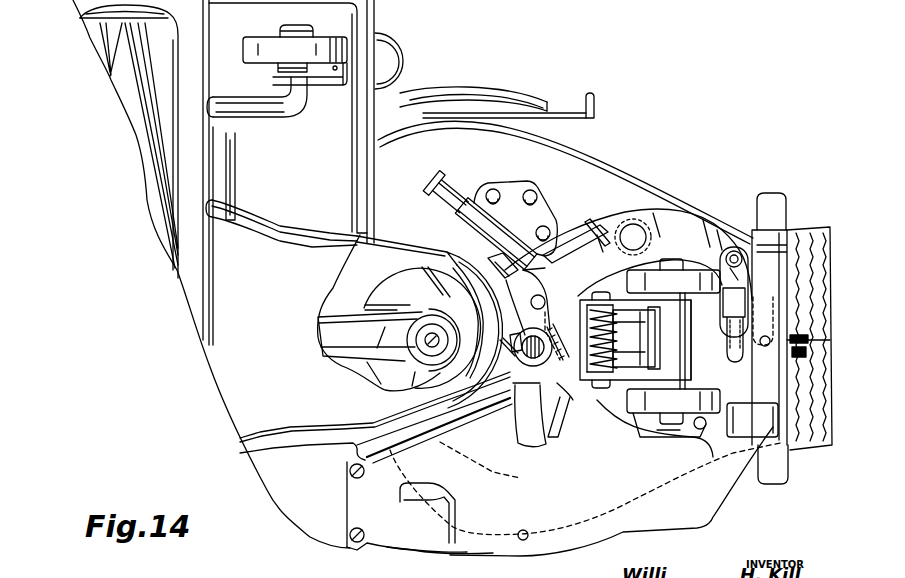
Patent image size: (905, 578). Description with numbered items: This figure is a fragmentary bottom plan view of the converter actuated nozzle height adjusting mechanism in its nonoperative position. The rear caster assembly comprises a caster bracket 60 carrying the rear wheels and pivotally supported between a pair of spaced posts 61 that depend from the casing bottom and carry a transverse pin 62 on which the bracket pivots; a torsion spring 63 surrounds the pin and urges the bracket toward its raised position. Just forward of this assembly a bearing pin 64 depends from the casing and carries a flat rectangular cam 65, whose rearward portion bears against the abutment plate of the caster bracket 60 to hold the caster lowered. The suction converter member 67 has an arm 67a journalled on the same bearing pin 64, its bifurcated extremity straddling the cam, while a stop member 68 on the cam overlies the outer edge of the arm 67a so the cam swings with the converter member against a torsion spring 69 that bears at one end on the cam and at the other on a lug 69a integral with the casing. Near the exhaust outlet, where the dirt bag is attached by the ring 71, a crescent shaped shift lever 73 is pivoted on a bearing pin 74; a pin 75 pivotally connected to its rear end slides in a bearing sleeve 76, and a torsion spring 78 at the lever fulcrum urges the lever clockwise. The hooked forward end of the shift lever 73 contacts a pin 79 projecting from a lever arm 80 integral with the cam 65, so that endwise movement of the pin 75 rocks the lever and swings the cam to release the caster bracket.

The caster bracket 60 is at (677, 363).
The posts 61 is at (618, 312).
The transverse pin 62 is at (620, 343).
The torsion spring 63 is at (657, 323).
The bearing pin 64 is at (520, 357).
The cam 65 is at (512, 346).
The suction converter member 67 is at (707, 503).
The arm 67a is at (548, 450).
The stop member 68 is at (548, 428).
The torsion spring 69 is at (460, 368).
The lug 69a is at (546, 277).
The ring 71 is at (757, 247).
The shift lever 73 is at (681, 230).
The bearing pin 74 is at (633, 232).
The pin 75 is at (737, 348).
The bearing sleeve 76 is at (742, 298).
The torsion spring 78 is at (605, 232).
The pin 79 is at (546, 300).
The lever arm 80 is at (546, 313).